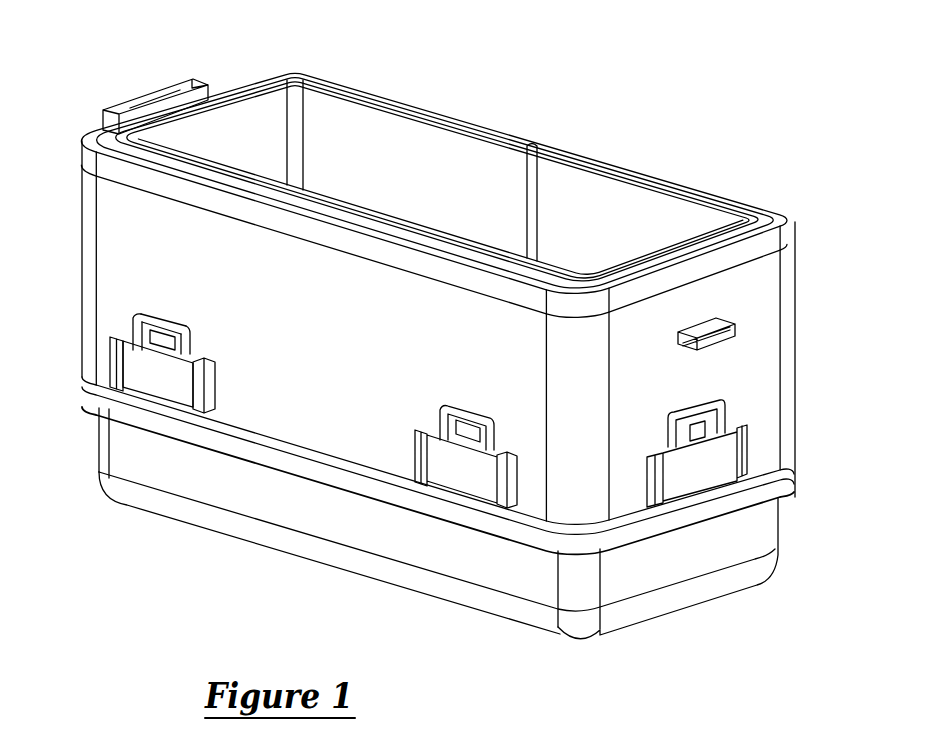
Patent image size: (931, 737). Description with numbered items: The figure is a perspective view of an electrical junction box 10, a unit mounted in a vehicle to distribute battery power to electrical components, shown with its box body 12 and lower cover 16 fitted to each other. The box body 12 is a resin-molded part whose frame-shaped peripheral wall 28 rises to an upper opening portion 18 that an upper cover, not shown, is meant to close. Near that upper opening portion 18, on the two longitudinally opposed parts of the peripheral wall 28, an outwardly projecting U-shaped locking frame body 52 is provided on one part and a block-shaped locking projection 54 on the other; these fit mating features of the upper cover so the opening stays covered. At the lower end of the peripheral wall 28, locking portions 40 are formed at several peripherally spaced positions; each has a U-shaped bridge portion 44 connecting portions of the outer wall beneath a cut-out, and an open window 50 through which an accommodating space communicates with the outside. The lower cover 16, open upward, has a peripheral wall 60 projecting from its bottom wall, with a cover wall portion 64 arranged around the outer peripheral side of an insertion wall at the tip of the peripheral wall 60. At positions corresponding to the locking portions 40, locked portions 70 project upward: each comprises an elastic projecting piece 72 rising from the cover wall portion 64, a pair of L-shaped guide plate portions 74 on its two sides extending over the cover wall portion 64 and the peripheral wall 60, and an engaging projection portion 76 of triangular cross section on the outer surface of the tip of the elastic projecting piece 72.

The electrical junction box 10 is at (530, 52).
The box body 12 is at (808, 348).
The lower cover 16 is at (768, 605).
The upper opening portion 18 is at (718, 175).
The peripheral wall 28 is at (107, 229).
The locking portion 40 is at (104, 352).
The bridge portion 44 is at (150, 378).
The open window 50 is at (147, 336).
The locking frame body 52 is at (150, 100).
The locking projection 54 is at (716, 332).
The peripheral wall 60 is at (118, 452).
The cover wall portion 64 is at (107, 398).
The locked portion 70 is at (122, 300).
The elastic projecting piece 72 is at (167, 322).
The guide plate portion 74 is at (143, 320).
The engaging projection portion 76 is at (160, 340).